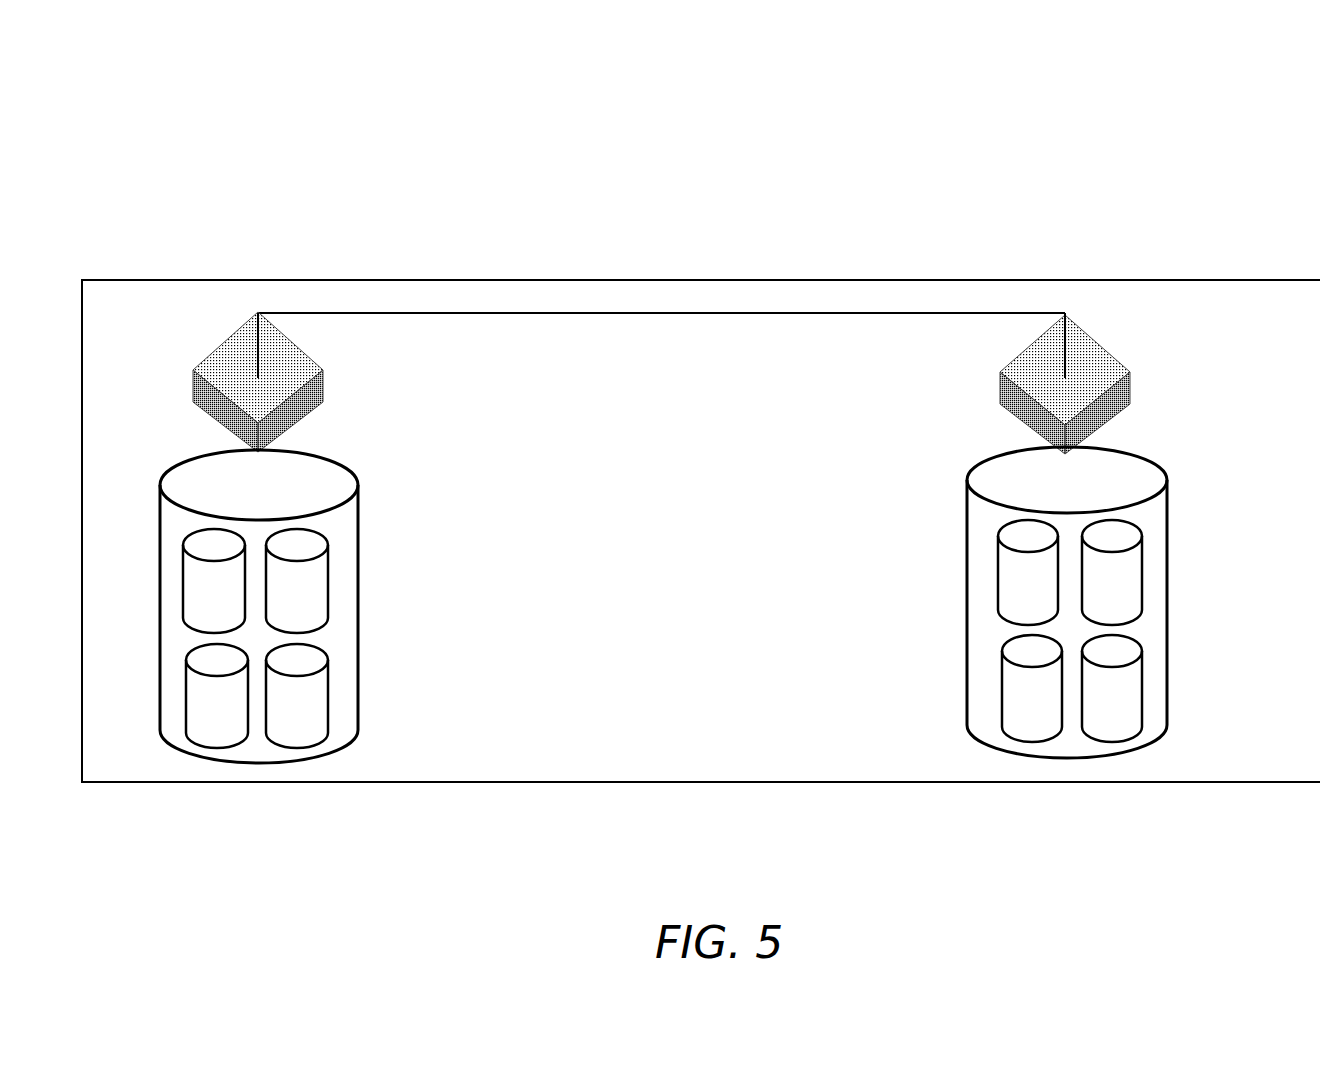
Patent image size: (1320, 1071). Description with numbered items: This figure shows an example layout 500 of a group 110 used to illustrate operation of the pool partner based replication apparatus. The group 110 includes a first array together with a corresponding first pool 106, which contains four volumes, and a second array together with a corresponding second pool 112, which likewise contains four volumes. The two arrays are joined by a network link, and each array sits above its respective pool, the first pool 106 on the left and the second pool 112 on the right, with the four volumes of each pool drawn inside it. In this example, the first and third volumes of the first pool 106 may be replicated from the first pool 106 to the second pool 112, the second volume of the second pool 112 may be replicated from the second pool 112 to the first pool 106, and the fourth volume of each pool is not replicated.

The example layout 500 is at (733, 217).
The group 110 is at (400, 278).
The first pool 106 is at (358, 582).
The second pool 112 is at (1168, 590).